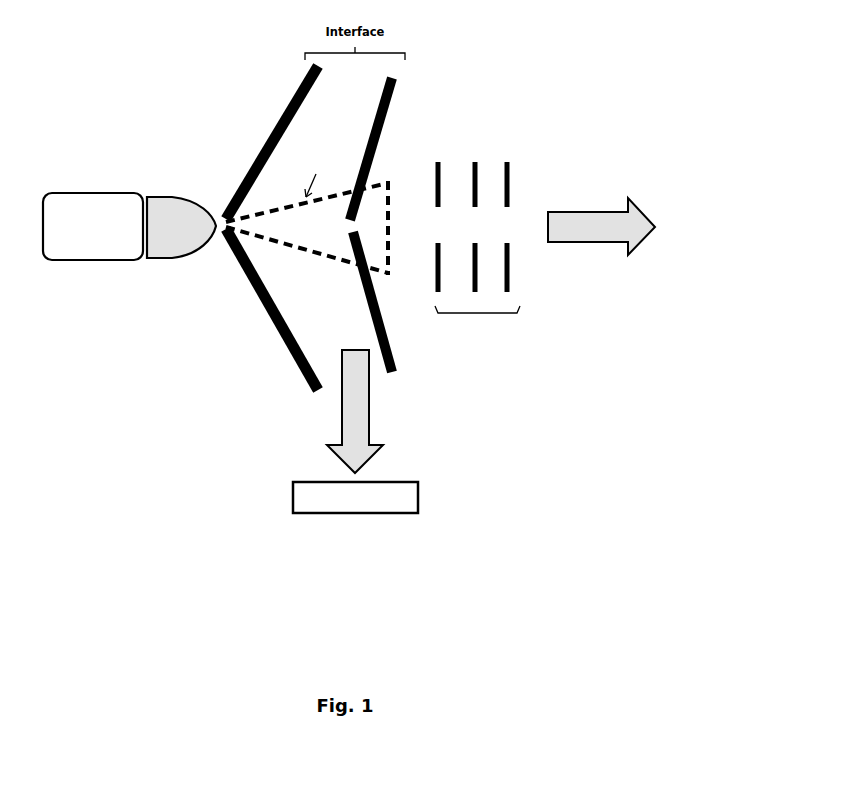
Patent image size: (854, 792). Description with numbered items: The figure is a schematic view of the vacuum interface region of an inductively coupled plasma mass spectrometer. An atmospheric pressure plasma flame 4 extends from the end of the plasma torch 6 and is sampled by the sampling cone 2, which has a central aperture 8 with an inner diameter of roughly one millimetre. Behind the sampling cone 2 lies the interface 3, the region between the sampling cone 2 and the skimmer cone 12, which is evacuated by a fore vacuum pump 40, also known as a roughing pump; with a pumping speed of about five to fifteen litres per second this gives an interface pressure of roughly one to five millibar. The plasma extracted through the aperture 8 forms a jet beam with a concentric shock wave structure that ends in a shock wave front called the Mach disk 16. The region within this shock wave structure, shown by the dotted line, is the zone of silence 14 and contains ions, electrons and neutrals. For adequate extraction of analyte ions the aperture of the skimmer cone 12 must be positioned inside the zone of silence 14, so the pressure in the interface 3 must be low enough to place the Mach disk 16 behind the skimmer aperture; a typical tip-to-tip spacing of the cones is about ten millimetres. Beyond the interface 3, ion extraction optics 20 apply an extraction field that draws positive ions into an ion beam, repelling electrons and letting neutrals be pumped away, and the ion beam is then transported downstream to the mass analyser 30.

The sampling cone 2 is at (262, 300).
The interface 3 is at (315, 262).
The plasma flame 4 is at (182, 197).
The plasma torch 6 is at (90, 193).
The central aperture 8 is at (220, 218).
The skimmer cone 12 is at (393, 97).
The zone of silence 14 is at (310, 255).
The Mach disk 16 is at (390, 183).
The ion extraction optics 20 is at (482, 313).
The mass analyser 30 is at (644, 243).
The fore vacuum pump 40 is at (355, 451).